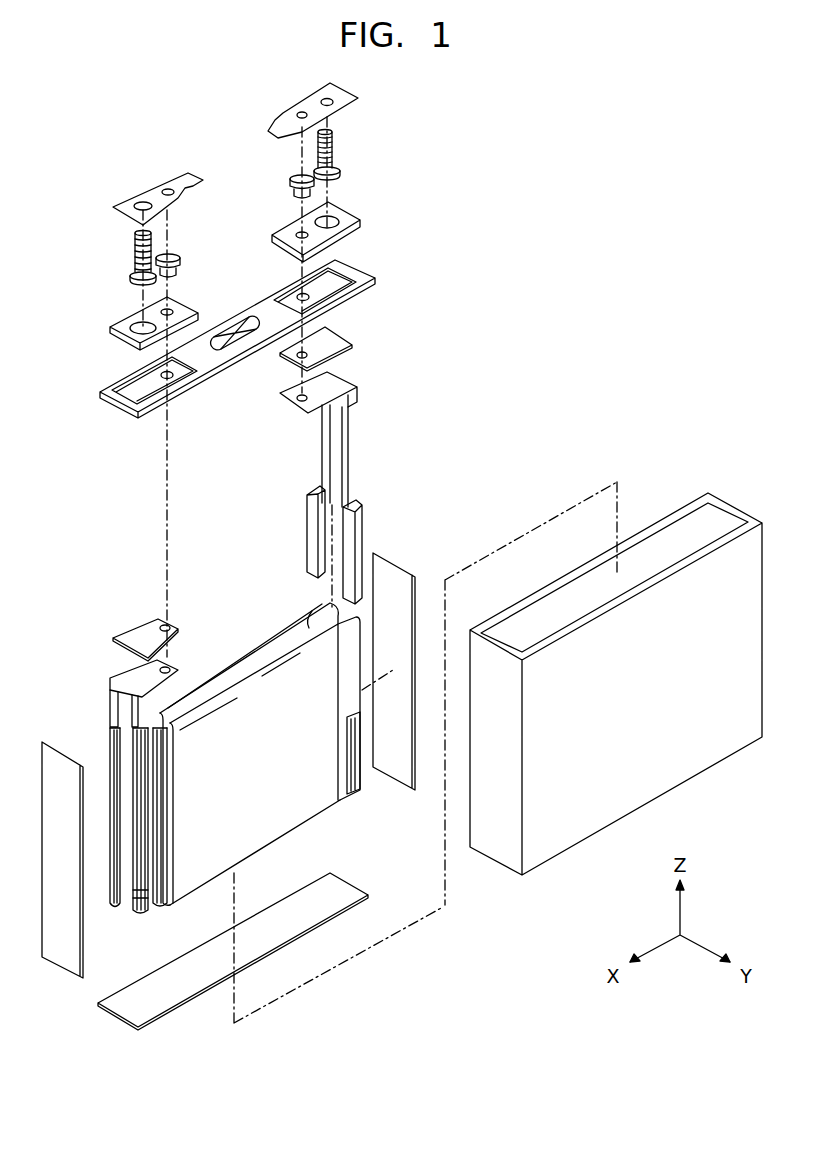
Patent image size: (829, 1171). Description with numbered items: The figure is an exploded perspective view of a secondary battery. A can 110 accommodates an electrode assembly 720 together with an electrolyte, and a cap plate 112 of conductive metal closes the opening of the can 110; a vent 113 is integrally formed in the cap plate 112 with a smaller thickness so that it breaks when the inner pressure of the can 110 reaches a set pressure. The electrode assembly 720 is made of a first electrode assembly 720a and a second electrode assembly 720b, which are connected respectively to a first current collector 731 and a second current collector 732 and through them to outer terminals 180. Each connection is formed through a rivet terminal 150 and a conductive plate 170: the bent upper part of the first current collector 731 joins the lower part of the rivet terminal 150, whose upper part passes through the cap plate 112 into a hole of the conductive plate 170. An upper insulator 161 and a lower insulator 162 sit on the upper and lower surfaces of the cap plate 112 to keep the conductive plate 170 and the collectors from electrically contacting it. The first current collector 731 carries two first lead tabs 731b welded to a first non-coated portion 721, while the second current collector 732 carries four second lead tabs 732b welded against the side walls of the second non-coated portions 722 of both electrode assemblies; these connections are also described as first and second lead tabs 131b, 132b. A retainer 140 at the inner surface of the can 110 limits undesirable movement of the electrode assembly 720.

The can 110 is at (550, 843).
The cap plate 112 is at (248, 308).
The vent 113 is at (227, 327).
The first lead tab 131b is at (357, 793).
The second lead tab 132b is at (153, 905).
The retainer 140 is at (62, 960).
The rivet terminal 150 is at (295, 178).
The upper insulator 161 is at (117, 337).
The lower insulator 162 is at (340, 342).
The conductive plate 170 is at (340, 95).
The outer terminal 180 is at (333, 148).
The electrode assembly 720 is at (197, 607).
The first electrode assembly 720a is at (212, 668).
The second electrode assembly 720b is at (270, 678).
The first non-coated portion 721 is at (350, 660).
The second non-coated portion 722 is at (113, 898).
The first current collector 731 is at (360, 390).
The first lead tab 731b is at (323, 468).
The second current collector 732 is at (122, 675).
The second lead tab 732b is at (135, 712).